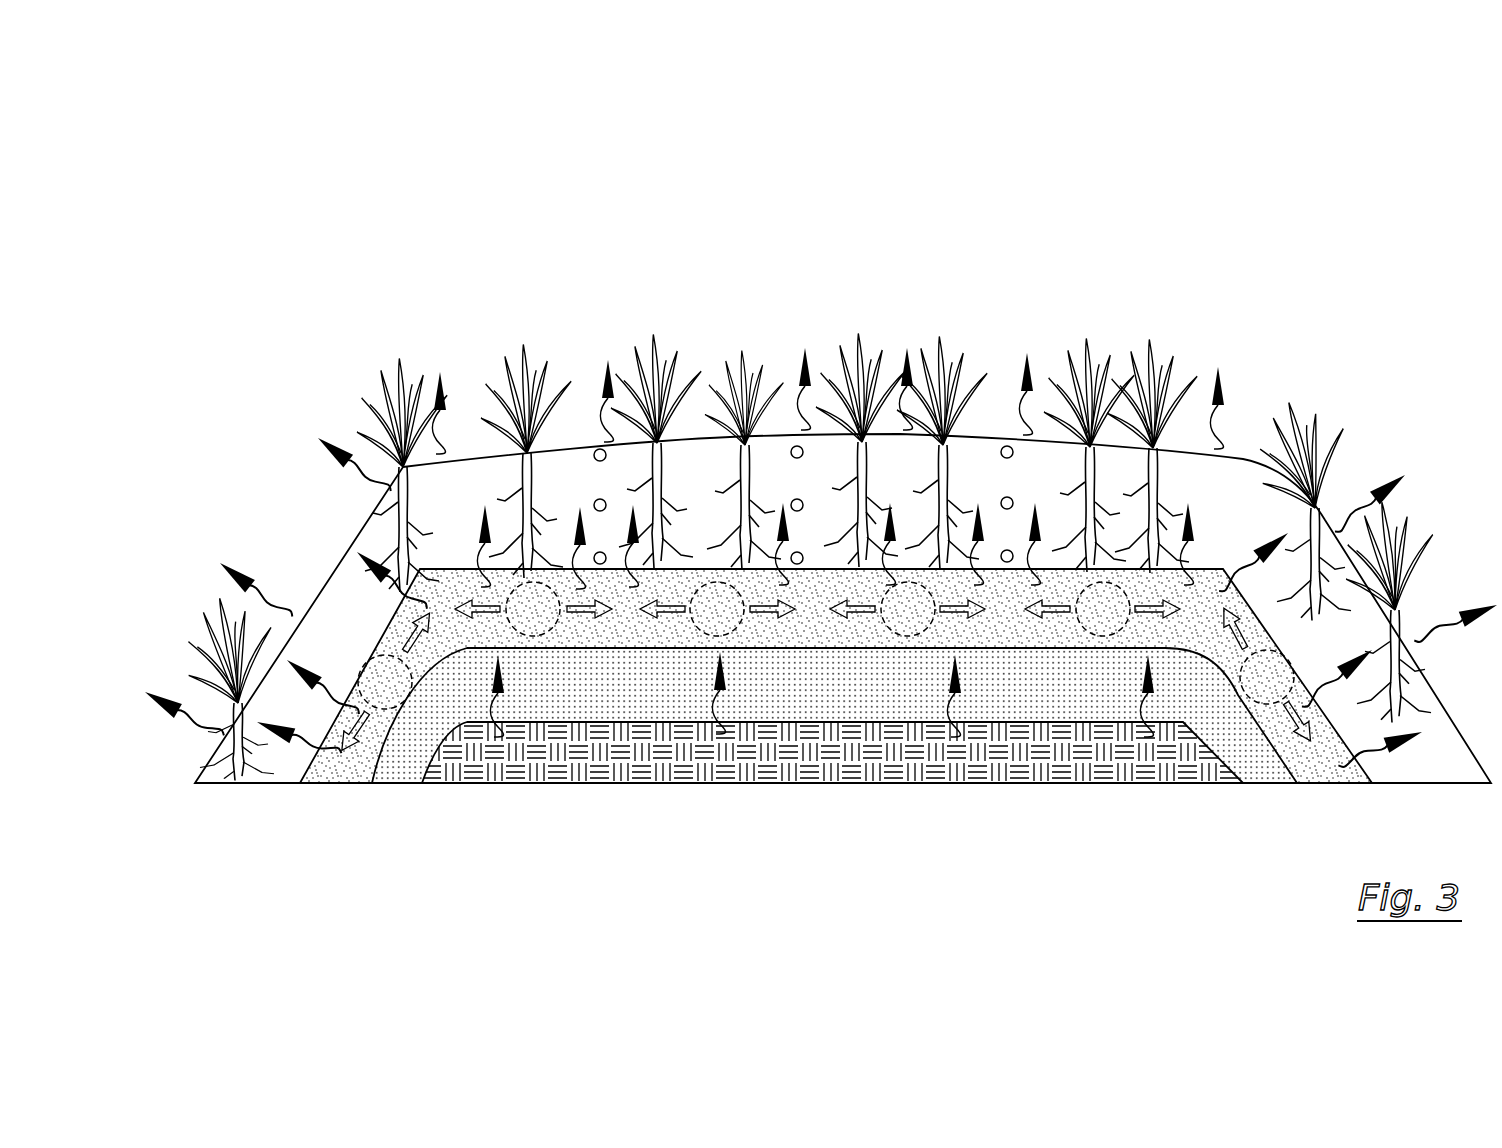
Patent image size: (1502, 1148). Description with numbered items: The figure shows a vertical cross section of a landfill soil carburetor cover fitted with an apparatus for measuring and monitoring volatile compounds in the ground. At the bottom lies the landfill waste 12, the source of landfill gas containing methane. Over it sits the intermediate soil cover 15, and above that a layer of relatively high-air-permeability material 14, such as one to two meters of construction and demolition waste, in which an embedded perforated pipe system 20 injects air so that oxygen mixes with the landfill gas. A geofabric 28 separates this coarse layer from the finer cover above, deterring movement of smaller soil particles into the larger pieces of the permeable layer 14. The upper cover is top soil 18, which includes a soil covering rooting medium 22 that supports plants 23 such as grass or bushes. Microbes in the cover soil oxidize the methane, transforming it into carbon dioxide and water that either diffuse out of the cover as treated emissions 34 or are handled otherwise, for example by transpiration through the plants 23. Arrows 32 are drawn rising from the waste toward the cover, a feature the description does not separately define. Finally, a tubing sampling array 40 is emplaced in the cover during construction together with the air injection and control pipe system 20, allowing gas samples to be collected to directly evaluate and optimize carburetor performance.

The landfill waste 12 is at (983, 757).
The high-air-permeability layer 14 is at (460, 593).
The intermediate soil cover 15 is at (400, 768).
The top soil 18 is at (547, 473).
The perforated pipe system 20 is at (708, 583).
The soil covering rooting medium 22 is at (781, 433).
The plants 23 is at (1297, 412).
The geofabric 28 is at (372, 638).
The landfill gas flow 32 is at (505, 705).
The treated emissions 34 is at (1217, 365).
The sampling tubing 40 is at (998, 442).